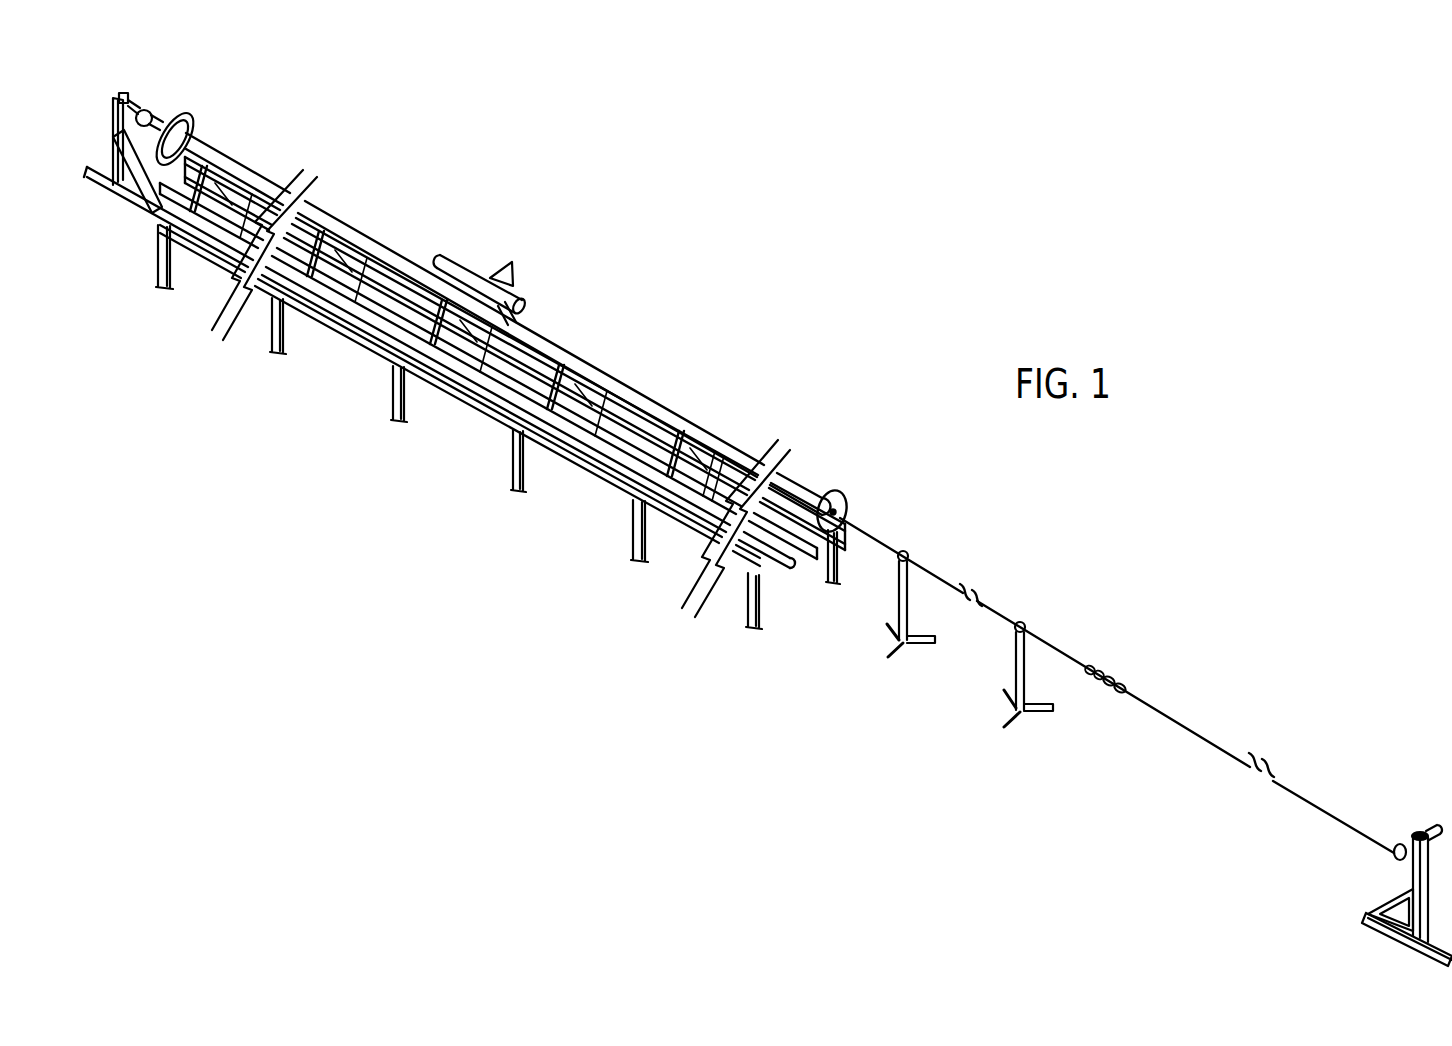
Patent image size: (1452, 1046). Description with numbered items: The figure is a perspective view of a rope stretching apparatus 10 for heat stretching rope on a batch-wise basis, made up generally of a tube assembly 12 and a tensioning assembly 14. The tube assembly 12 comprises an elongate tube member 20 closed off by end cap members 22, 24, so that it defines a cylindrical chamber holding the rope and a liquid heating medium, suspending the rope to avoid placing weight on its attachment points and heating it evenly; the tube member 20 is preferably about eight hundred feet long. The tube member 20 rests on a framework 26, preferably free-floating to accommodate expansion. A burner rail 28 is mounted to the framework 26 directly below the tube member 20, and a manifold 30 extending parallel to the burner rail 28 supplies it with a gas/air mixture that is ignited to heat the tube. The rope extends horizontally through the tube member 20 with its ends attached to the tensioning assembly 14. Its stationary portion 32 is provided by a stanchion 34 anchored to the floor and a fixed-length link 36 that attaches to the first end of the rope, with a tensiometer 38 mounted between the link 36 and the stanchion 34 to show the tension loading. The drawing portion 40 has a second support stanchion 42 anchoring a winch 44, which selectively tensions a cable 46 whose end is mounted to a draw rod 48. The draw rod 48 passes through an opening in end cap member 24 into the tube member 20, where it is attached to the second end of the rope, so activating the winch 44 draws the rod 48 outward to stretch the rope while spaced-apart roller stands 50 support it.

The rope stretching apparatus 10 is at (590, 277).
The tube assembly 12 is at (633, 372).
The tensioning assembly 14 is at (1110, 633).
The tube member 20 is at (569, 366).
The end cap member 22 is at (209, 133).
The end cap member 24 is at (848, 491).
The framework 26 is at (505, 455).
The burner rail 28 is at (603, 470).
The manifold 30 is at (628, 482).
The stationary portion 32 is at (127, 205).
The stanchion 34 is at (103, 187).
The fixed-length link 36 is at (188, 122).
The tensiometer 38 is at (158, 112).
The drawing portion 40 is at (1370, 877).
The second support stanchion 42 is at (1375, 896).
The winch 44 is at (1392, 850).
The cable 46 is at (1184, 718).
The draw rod 48 is at (933, 572).
The roller stands 50 is at (1018, 660).